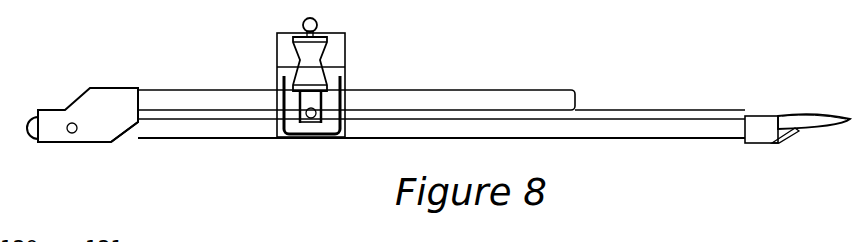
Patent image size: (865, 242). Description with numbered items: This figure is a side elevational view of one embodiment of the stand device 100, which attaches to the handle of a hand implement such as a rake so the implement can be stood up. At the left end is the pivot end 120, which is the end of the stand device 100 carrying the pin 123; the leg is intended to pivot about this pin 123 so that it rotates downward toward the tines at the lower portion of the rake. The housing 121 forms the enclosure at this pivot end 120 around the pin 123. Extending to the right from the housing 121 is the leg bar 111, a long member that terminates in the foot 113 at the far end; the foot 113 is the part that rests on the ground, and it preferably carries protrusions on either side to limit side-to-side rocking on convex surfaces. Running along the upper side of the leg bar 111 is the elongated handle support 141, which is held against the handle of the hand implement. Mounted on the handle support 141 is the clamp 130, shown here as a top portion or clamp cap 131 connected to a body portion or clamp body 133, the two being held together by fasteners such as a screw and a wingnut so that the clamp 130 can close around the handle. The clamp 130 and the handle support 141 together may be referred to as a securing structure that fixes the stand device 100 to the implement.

The stand device 100 is at (630, 63).
The leg bar 111 is at (681, 125).
The foot 113 is at (805, 115).
The pivot end 120 is at (48, 95).
The housing 121 is at (112, 87).
The pin 123 is at (68, 134).
The clamp 130 is at (298, 77).
The clamp cap 131 is at (345, 46).
The clamp body 133 is at (345, 74).
The handle support 141 is at (499, 98).